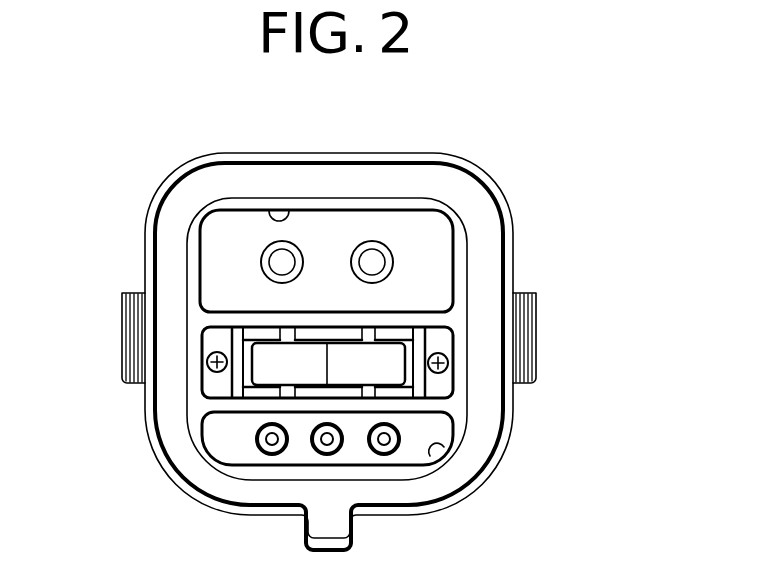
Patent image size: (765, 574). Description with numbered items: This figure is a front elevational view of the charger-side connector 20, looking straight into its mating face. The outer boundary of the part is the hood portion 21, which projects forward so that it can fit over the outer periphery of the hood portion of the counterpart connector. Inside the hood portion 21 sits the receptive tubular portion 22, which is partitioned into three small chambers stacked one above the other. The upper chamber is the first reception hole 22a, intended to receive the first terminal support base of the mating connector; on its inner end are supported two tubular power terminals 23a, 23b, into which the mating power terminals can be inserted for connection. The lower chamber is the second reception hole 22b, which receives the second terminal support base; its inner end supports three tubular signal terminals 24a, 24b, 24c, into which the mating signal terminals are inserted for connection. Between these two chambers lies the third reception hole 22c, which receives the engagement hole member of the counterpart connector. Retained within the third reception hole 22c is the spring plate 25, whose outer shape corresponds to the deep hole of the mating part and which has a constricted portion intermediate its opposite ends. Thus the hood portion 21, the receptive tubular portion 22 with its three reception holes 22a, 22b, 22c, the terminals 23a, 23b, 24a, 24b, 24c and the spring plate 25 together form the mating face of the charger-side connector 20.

The charger-side connector 20 is at (403, 153).
The hood portion 21 is at (505, 213).
The receptive tubular portion 22 is at (452, 302).
The first reception hole 22a is at (289, 207).
The second reception hole 22b is at (443, 445).
The third reception hole 22c is at (440, 388).
The tubular power terminal 23a is at (266, 248).
The tubular power terminal 23b is at (388, 251).
The tubular signal terminal 24a is at (260, 450).
The tubular signal terminal 24b is at (323, 454).
The tubular signal terminal 24c is at (384, 454).
The spring plate 25 is at (390, 363).